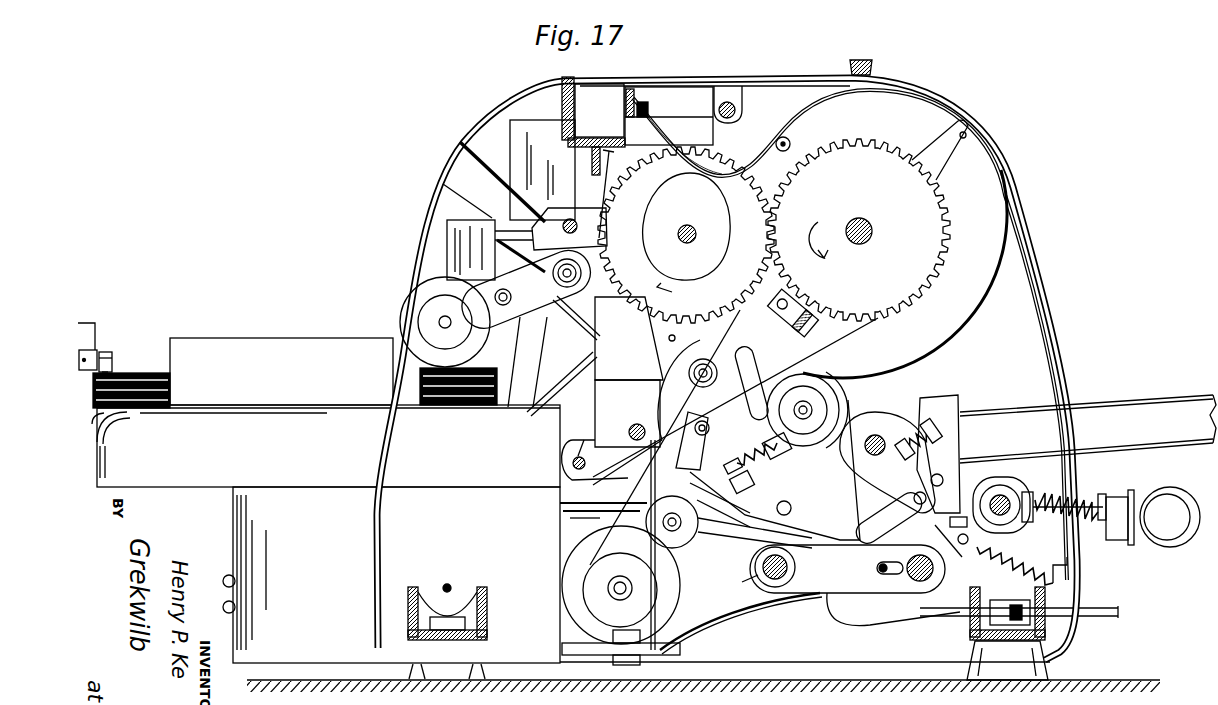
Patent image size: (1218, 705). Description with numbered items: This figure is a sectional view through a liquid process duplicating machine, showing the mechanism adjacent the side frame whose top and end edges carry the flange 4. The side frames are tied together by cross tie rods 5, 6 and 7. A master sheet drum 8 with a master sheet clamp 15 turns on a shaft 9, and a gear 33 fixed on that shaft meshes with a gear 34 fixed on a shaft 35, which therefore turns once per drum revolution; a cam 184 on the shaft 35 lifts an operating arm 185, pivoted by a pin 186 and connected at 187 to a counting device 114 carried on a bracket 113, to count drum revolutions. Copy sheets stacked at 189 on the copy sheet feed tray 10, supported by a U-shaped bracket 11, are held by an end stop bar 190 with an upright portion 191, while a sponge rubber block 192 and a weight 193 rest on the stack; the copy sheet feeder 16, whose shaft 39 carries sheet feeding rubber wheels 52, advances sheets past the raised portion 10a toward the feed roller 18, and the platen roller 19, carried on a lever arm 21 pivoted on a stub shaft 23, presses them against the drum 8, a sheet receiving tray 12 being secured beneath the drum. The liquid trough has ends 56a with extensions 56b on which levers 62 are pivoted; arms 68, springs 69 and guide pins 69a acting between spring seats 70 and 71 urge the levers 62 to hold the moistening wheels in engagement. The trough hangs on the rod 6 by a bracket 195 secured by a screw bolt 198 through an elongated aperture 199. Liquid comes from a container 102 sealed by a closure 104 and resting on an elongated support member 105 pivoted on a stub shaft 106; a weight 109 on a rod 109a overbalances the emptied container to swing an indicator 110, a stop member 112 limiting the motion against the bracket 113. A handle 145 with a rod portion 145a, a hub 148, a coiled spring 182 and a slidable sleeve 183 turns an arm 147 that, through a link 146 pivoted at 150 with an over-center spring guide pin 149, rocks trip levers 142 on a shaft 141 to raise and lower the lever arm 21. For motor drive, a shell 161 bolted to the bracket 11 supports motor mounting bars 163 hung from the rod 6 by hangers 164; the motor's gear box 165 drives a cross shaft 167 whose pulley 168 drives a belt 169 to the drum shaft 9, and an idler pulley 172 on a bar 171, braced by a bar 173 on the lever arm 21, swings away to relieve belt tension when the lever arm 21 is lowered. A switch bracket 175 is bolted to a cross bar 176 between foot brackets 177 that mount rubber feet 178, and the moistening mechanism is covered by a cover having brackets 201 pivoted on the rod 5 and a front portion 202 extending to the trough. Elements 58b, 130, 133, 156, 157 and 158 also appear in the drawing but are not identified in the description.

The flange 4 is at (1035, 344).
The cross tie rod 5 is at (737, 110).
The cross tie rod 6 is at (629, 432).
The cross tie rod 7 is at (1010, 500).
The master sheet drum 8 is at (982, 318).
The shaft 9 is at (874, 234).
The copy sheet feed tray 10 is at (95, 420).
The raised portion 10a is at (568, 380).
The bracket 11 is at (328, 446).
The sheet receiving tray 12 is at (1088, 429).
The master sheet clamp 15 is at (770, 340).
The copy sheet feeder 16 is at (526, 289).
The feed roller 18 is at (708, 379).
The platen roller 19 is at (840, 395).
The lever arm 21 is at (726, 470).
The stub shaft 23 is at (876, 455).
The gear 33 is at (868, 220).
The gear 34 is at (686, 235).
The shaft 35 is at (687, 224).
The shaft 39 is at (560, 282).
The sheet feeding rubber wheels 52 is at (415, 308).
The trough ends 56a is at (629, 338).
The extensions 56b is at (672, 332).
The nut 58b is at (511, 300).
The levers 62 is at (686, 386).
The arms 68 is at (750, 363).
The springs 69 is at (762, 464).
The guide pins 69a is at (728, 465).
The spring seat 70 is at (788, 452).
The spring seat 71 is at (752, 488).
The container 102 is at (542, 170).
The closure 104 is at (648, 108).
The elongated support member 105 is at (552, 240).
The stub shaft 106 is at (572, 219).
The weight 109 is at (457, 221).
The rod 109a is at (500, 217).
The indicator 110 is at (502, 182).
The stop member 112 is at (612, 160).
The bracket 113 is at (620, 142).
The counting device 114 is at (593, 108).
The lever 130 is at (720, 530).
The links 133 is at (540, 340).
The shaft 141 is at (914, 562).
The trip levers 142 is at (958, 570).
The handle 145 is at (1158, 547).
The rod portion 145a is at (1100, 494).
The link 146 is at (960, 521).
The arm 147 is at (960, 470).
The hub 148 is at (1027, 523).
The over-center spring guide pin 149 is at (1022, 567).
The pivot connection 150 is at (957, 540).
The link 156 is at (847, 569).
The pivot 157 is at (737, 585).
The pin 158 is at (792, 558).
The shell 161 is at (391, 575).
The motor mounting bars 163 is at (566, 645).
The hangers 164 is at (676, 617).
The gear box 165 is at (679, 580).
The cross shaft 167 is at (617, 593).
The pulley 168 is at (620, 590).
The belt 169 is at (866, 338).
The bar 171 is at (692, 441).
The idler pulley 172 is at (672, 522).
The bar 173 is at (720, 505).
The bracket 175 is at (905, 602).
The cross bar 176 is at (972, 622).
The foot brackets 177 is at (487, 630).
The rubber feet 178 is at (445, 686).
The coiled spring 182 is at (1068, 520).
The sleeve 183 is at (1112, 540).
The cam 184 is at (687, 226).
The operating arm 185 is at (697, 151).
The pin 186 is at (791, 141).
The connection 187 is at (636, 96).
The stack of copy sheets 189 is at (145, 374).
The end stop bar 190 is at (97, 440).
The upright portion 191 is at (93, 390).
The block of sponge rubber 192 is at (110, 352).
The weight 193 is at (79, 346).
The bracket 195 is at (611, 430).
The screw bolt 198 is at (585, 462).
The elongated aperture 199 is at (580, 440).
The brackets 201 is at (742, 95).
The front portion 202 is at (455, 194).